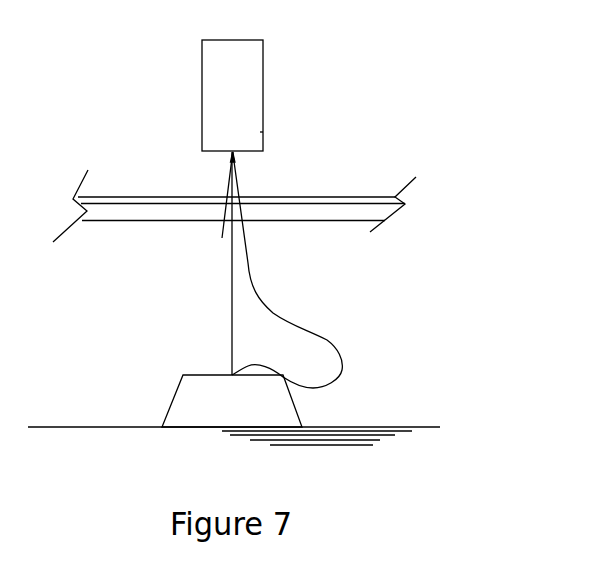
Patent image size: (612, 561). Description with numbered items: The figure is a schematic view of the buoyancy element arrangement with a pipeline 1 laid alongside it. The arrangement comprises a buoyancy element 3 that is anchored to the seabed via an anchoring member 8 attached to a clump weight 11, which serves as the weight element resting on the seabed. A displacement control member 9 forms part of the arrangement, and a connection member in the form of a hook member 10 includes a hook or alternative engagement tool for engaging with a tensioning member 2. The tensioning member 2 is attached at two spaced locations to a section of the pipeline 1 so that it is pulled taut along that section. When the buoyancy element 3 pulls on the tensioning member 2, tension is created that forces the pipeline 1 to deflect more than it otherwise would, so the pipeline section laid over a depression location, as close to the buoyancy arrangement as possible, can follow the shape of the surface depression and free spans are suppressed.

The pipeline 1 is at (99, 221).
The tensioning member 2 is at (373, 196).
The buoyancy element 3 is at (224, 106).
The anchoring member 8 is at (231, 328).
The displacement control member 9 is at (312, 332).
The hook member 10 is at (222, 236).
The clump weight 11 is at (245, 413).